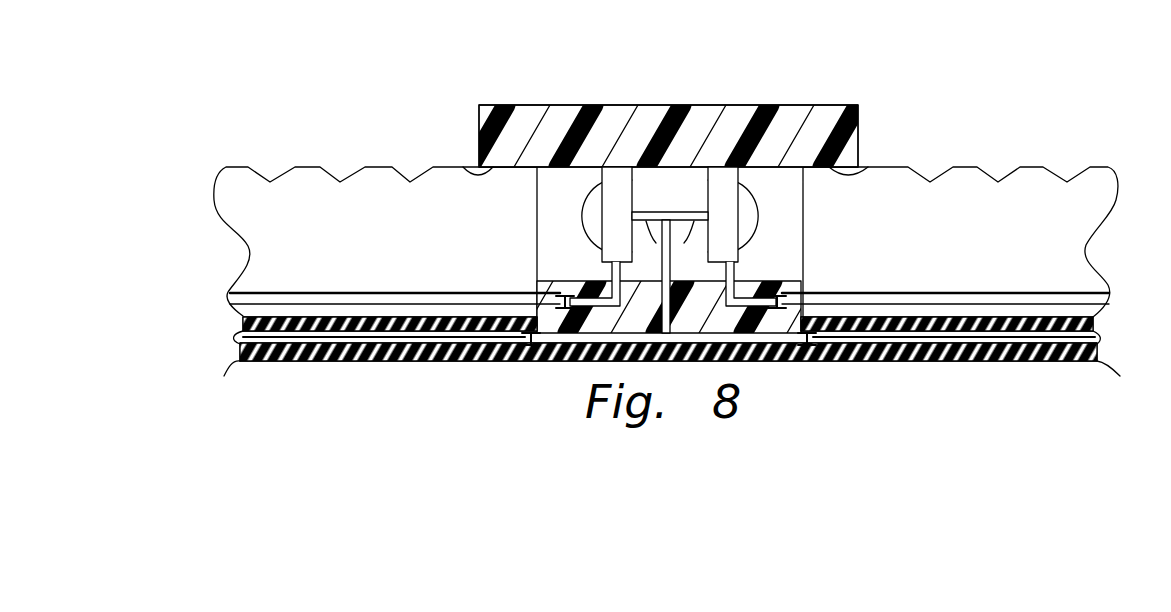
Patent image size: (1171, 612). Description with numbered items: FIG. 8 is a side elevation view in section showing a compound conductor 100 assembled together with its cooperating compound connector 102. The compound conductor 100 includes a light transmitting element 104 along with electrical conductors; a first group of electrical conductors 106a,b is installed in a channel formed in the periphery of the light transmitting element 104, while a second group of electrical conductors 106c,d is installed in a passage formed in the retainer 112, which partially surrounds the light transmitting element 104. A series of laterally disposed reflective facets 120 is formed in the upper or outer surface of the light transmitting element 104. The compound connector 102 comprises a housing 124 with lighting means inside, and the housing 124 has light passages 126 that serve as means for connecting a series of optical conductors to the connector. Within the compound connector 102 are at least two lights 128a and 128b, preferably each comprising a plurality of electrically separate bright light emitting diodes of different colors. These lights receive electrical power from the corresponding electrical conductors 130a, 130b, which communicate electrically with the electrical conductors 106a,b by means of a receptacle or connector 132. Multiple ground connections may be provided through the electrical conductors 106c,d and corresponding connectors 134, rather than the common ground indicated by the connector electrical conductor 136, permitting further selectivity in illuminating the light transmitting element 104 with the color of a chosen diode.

The compound conductor 100 is at (330, 108).
The compound connector 102 is at (660, 68).
The light transmitting element 104 is at (999, 256).
The first group of electrical conductors 106a,b is at (224, 292).
The second group of electrical conductors 106c,d is at (240, 360).
The retainer 112 is at (392, 362).
The reflective facets 120 is at (420, 176).
The housing 124 is at (713, 103).
The light passages 126 is at (462, 164).
The light 128a is at (577, 213).
The light 128b is at (762, 213).
The electrical conductor 130a is at (608, 278).
The electrical conductor 130b is at (736, 280).
The receptacle or connector 132 is at (540, 290).
The connectors 134 is at (512, 356).
The connector electrical conductor 136 is at (697, 210).